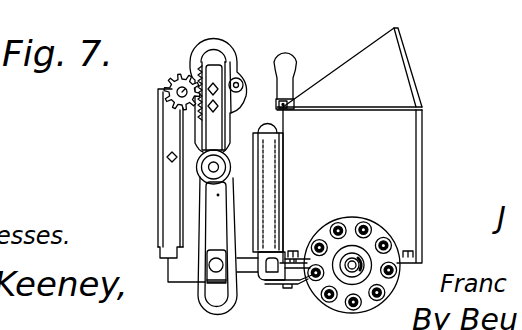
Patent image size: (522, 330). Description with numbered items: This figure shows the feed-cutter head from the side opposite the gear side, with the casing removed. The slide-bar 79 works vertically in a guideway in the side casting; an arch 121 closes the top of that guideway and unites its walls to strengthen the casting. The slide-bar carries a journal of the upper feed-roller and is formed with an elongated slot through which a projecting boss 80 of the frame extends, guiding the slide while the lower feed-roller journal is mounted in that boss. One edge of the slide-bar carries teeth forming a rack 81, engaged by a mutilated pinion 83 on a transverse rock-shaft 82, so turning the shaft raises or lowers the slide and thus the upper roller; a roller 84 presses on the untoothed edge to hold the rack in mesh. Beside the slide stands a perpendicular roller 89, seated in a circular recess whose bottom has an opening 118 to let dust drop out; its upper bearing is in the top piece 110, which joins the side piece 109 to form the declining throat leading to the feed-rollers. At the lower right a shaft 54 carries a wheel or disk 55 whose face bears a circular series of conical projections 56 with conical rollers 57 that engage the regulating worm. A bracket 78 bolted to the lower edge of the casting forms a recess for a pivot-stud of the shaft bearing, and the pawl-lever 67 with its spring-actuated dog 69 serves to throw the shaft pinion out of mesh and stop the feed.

The arch 121 is at (213, 43).
The slide-bar 79 is at (231, 117).
The rack 81 is at (192, 63).
The rock-shaft 82 is at (176, 90).
The mutilated pinion 83 is at (168, 95).
The projecting boss 80 is at (210, 277).
The roller 84 is at (242, 79).
The perpendicular roller 89 is at (281, 174).
The opening 118 is at (262, 266).
The bracket 78 is at (297, 281).
The lever 67 is at (294, 76).
The spring-actuated dog 69 is at (290, 103).
The top piece 110 is at (364, 53).
The side piece 109 is at (349, 145).
The wheel or disk 55 is at (392, 288).
The shaft 54 is at (354, 263).
The conical projection 56 is at (338, 222).
The conical roller 57 is at (315, 241).